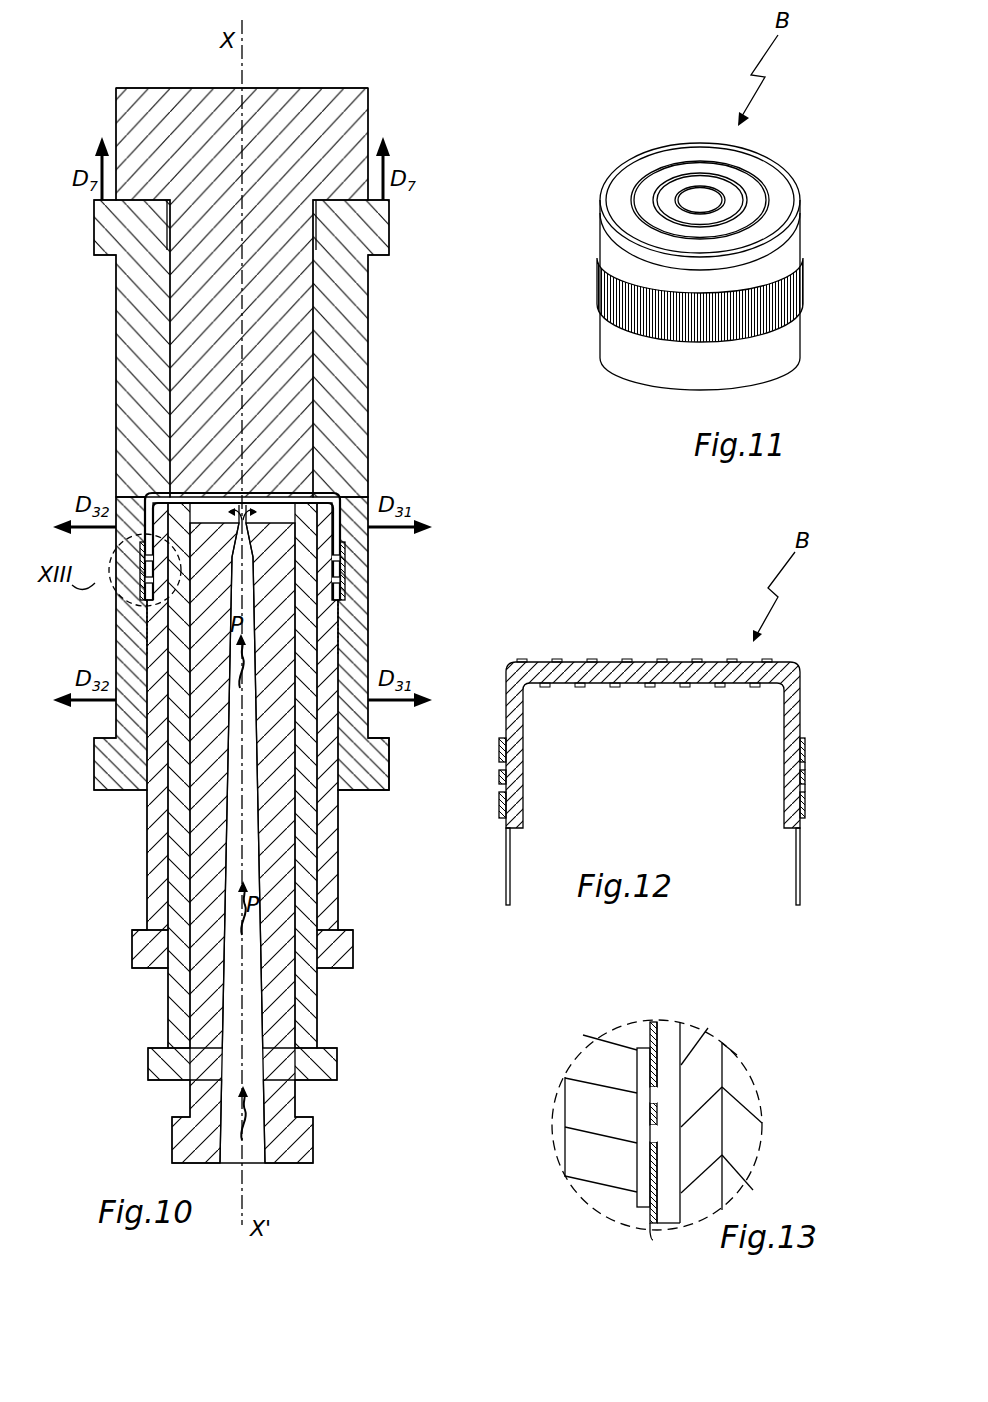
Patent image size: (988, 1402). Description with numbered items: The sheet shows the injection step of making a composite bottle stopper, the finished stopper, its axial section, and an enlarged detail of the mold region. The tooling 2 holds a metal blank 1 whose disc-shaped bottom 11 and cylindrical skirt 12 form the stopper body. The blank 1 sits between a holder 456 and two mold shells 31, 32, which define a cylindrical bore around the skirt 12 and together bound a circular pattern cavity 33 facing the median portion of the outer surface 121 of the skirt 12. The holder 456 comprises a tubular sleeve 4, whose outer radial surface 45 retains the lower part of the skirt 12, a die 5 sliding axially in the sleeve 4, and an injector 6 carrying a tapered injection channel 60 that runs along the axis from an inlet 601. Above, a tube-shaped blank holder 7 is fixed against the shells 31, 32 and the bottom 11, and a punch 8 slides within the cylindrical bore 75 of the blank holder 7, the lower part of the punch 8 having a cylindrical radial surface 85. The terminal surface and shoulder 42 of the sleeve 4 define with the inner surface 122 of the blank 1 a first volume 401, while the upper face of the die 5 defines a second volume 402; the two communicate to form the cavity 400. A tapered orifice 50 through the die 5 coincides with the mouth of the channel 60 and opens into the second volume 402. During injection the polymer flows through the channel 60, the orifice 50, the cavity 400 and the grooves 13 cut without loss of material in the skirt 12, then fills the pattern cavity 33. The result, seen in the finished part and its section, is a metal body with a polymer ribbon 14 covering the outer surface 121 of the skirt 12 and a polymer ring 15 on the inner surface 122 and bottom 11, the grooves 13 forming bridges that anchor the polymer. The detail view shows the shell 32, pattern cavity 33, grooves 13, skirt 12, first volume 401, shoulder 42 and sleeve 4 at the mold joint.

In FIG. 10, the punch 8 is at (345, 112).
In FIG. 10, the blank holder 7 is at (365, 230).
In FIG. 10, the cylindrical bore 75 is at (307, 330).
In FIG. 10, the cylindrical radial surface 85 is at (320, 388).
In FIG. 10, the tooling 2 is at (458, 352).
In FIG. 10, the traversing orifice 50 is at (187, 493).
In FIG. 10, the second volume 402 is at (290, 493).
In FIG. 10, the first volume 401 is at (300, 500).
In FIG. 13, the first volume 401 is at (664, 1067).
In FIG. 10, the cavity 400 is at (531, 444).
In FIG. 10, the metal blank 1 is at (347, 530).
In FIG. 10, the grooves 13 is at (347, 558).
In FIG. 12, the grooves 13 is at (792, 758).
In FIG. 13, the grooves 13 is at (645, 1133).
In FIG. 10, the pattern cavity 33 is at (344, 583).
In FIG. 13, the pattern cavity 33 is at (642, 1182).
In FIG. 10, the shoulder 42 is at (338, 605).
In FIG. 13, the shoulder 42 is at (670, 1217).
In FIG. 10, the mold shell 31 is at (357, 662).
In FIG. 10, the outer radial surface 45 is at (345, 770).
In FIG. 10, the mold shell 32 is at (123, 760).
In FIG. 13, the mold shell 32 is at (607, 1067).
In FIG. 10, the injection channel 60 is at (233, 967).
In FIG. 10, the sleeve 4 is at (343, 962).
In FIG. 13, the sleeve 4 is at (721, 1122).
In FIG. 10, the die 5 is at (335, 1060).
In FIG. 10, the injector 6 is at (303, 1153).
In FIG. 10, the holder 456 is at (406, 998).
In FIG. 10, the inlet 601 is at (253, 1177).
In FIG. 11, the bottom 11 is at (700, 200).
In FIG. 12, the bottom 11 is at (603, 662).
In FIG. 11, the circular ribbon 14 is at (610, 290).
In FIG. 12, the circular ribbon 14 is at (806, 798).
In FIG. 11, the skirt 12 is at (700, 266).
In FIG. 12, the skirt 12 is at (800, 708).
In FIG. 13, the skirt 12 is at (653, 1232).
In FIG. 12, the ring 15 is at (524, 714).
In FIG. 12, the inner surface 122 is at (790, 878).
In FIG. 12, the outer surface 121 is at (806, 870).